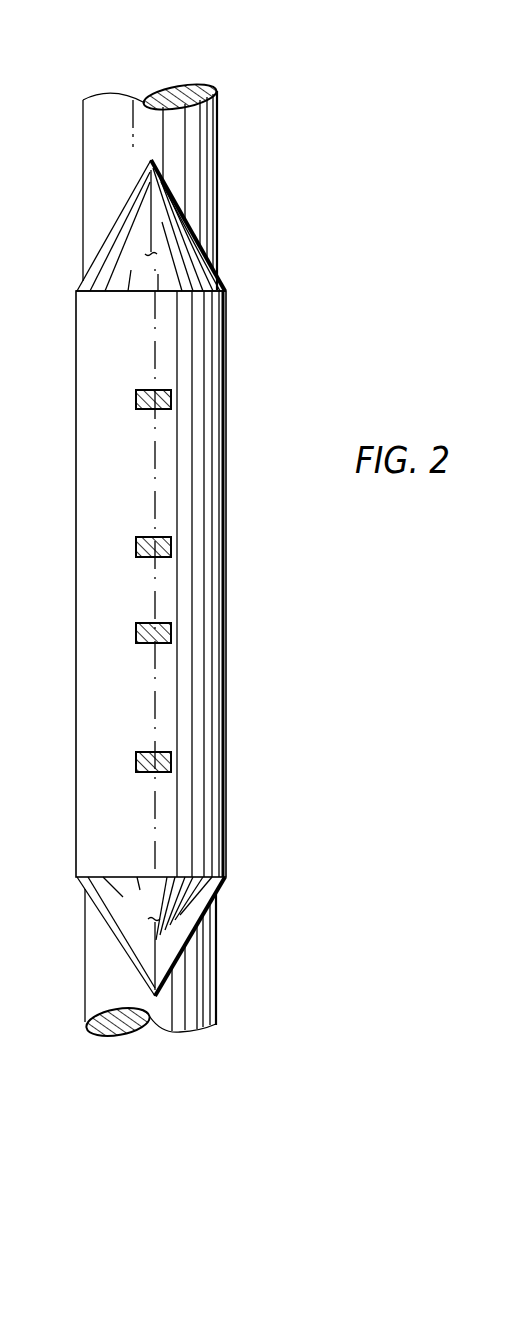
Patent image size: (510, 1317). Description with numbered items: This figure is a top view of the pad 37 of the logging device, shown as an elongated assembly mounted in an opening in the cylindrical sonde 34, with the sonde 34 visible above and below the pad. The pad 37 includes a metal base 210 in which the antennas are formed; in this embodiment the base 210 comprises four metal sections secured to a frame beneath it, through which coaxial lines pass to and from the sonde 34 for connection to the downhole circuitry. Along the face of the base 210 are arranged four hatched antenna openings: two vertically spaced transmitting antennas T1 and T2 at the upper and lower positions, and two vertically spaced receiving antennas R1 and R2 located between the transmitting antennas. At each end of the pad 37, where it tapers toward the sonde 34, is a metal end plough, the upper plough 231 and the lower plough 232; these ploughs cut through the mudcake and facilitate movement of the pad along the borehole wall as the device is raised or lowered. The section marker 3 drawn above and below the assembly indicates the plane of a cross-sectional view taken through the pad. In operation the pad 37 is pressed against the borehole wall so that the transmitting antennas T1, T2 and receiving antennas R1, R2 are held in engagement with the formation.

The section line 3- 3 is at (150, 73).
The sonde 34 is at (94, 167).
The metal end plough 231 is at (188, 268).
The pad 37 is at (68, 336).
The metal base 210 is at (198, 523).
The transmitting antenna T1 is at (136, 402).
The receiving antenna R1 is at (136, 548).
The receiving antenna R2 is at (136, 634).
The transmitting antenna T2 is at (136, 762).
The metal end plough 232 is at (187, 900).